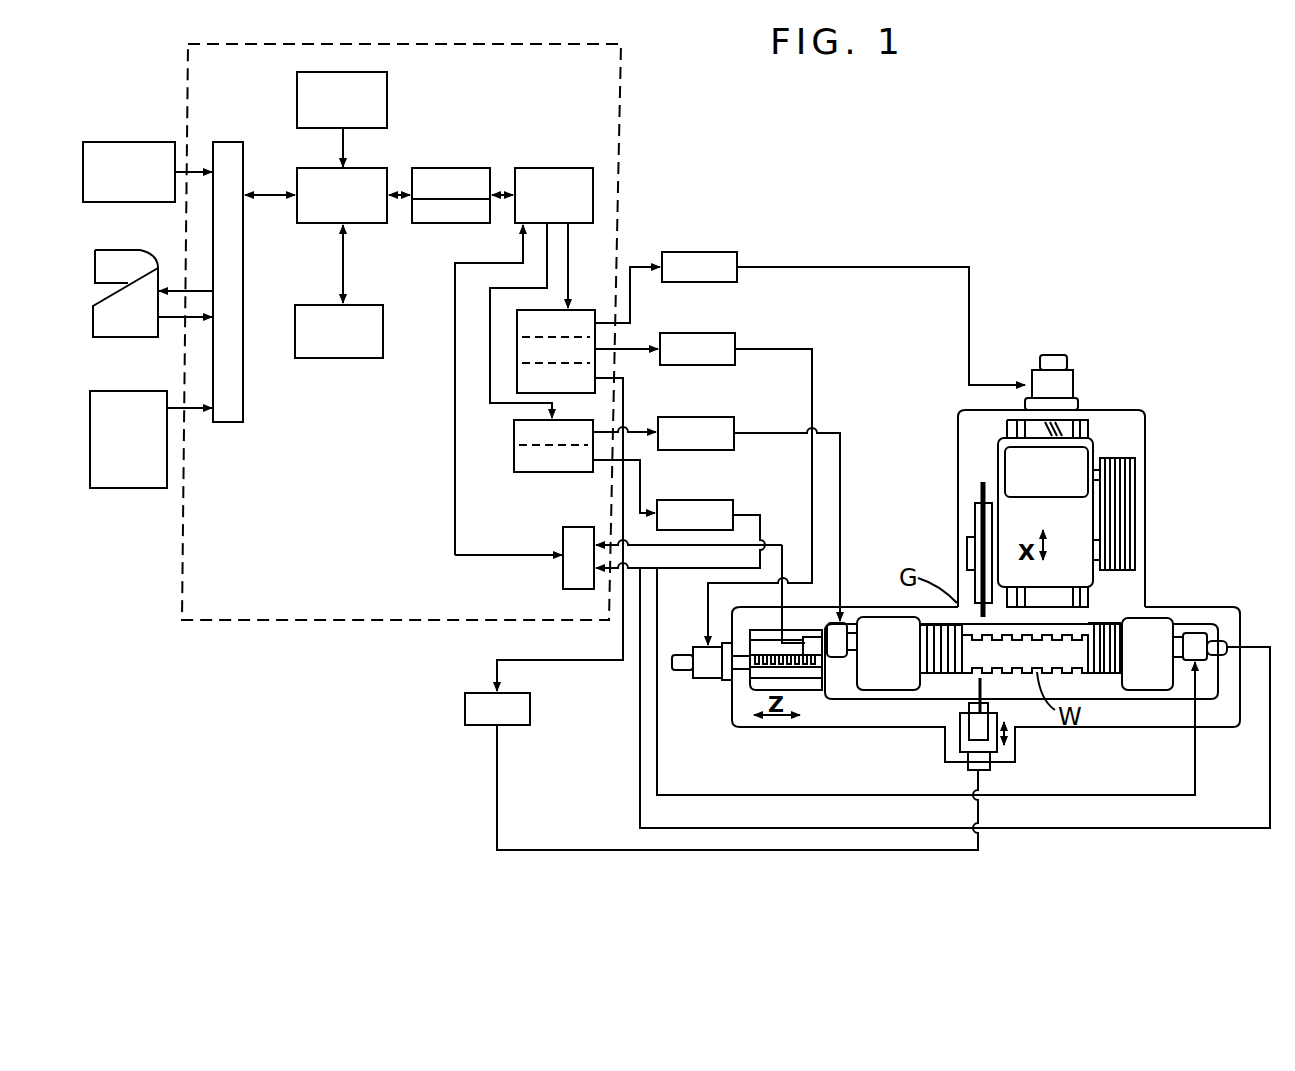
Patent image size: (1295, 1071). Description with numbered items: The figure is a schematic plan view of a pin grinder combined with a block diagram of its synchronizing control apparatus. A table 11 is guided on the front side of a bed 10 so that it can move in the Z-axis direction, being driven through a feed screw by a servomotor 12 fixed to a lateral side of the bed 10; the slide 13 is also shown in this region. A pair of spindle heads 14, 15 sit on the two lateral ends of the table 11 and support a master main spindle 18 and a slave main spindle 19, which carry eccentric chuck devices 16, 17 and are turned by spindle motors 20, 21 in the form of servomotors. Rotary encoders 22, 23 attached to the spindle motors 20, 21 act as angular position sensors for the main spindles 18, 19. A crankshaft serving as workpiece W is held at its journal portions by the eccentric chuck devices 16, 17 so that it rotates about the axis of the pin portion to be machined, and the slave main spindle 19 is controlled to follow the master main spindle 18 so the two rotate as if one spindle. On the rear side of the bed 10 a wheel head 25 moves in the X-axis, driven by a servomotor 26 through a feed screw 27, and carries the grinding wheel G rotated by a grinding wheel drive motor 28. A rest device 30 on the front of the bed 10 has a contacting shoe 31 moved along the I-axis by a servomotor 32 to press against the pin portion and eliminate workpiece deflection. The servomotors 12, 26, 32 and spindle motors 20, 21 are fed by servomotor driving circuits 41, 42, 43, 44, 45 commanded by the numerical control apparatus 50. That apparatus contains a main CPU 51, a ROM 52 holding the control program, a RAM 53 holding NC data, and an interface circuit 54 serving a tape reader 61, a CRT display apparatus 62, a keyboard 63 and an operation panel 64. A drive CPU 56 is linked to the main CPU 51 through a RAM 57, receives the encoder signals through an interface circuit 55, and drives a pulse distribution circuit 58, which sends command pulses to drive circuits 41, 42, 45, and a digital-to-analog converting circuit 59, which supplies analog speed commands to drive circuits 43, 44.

The bed 10 is at (1236, 607).
The table 11 is at (1208, 699).
The servomotor 12 is at (700, 680).
The Z-axis slide table 13 is at (750, 683).
The spindle head 14 is at (877, 690).
The spindle head 15 is at (1150, 690).
The eccentric chuck device 16 is at (958, 675).
The eccentric chuck device 17 is at (1100, 675).
The master main spindle 18 is at (935, 680).
The slave main spindle 19 is at (1112, 675).
The spindle motor 20 is at (845, 657).
The spindle motor 21 is at (1198, 607).
The rotary encoder 22 is at (823, 660).
The rotary encoder 23 is at (1227, 650).
The wheel head 25 is at (1093, 583).
The servomotor 26 is at (1070, 368).
The feed screw 27 is at (1063, 432).
The grinding wheel drive motor 28 is at (1093, 455).
The rest device 30 is at (1005, 762).
The contacting shoe 31 is at (988, 684).
The servomotor 32 is at (988, 770).
The drive circuit 41 is at (705, 252).
The drive circuit 42 is at (705, 333).
The drive circuit 43 is at (703, 417).
The drive circuit 44 is at (714, 478).
The drive circuit 45 is at (465, 705).
The numerical control apparatus 50 is at (621, 115).
The main CPU 51 is at (370, 168).
The ROM 52 is at (387, 100).
The RAM 53 is at (383, 318).
The interface circuit 54 is at (233, 142).
The interface circuit 55 is at (563, 537).
The drive CPU 56 is at (556, 168).
The RAM 57 is at (452, 168).
The pulse distribution circuit 58 is at (517, 355).
The digital-to-analog converting circuit 59 is at (514, 458).
The tape reader 61 is at (83, 165).
The CRT display apparatus 62 is at (95, 266).
The keyboard 63 is at (93, 321).
The operation panel 64 is at (90, 412).